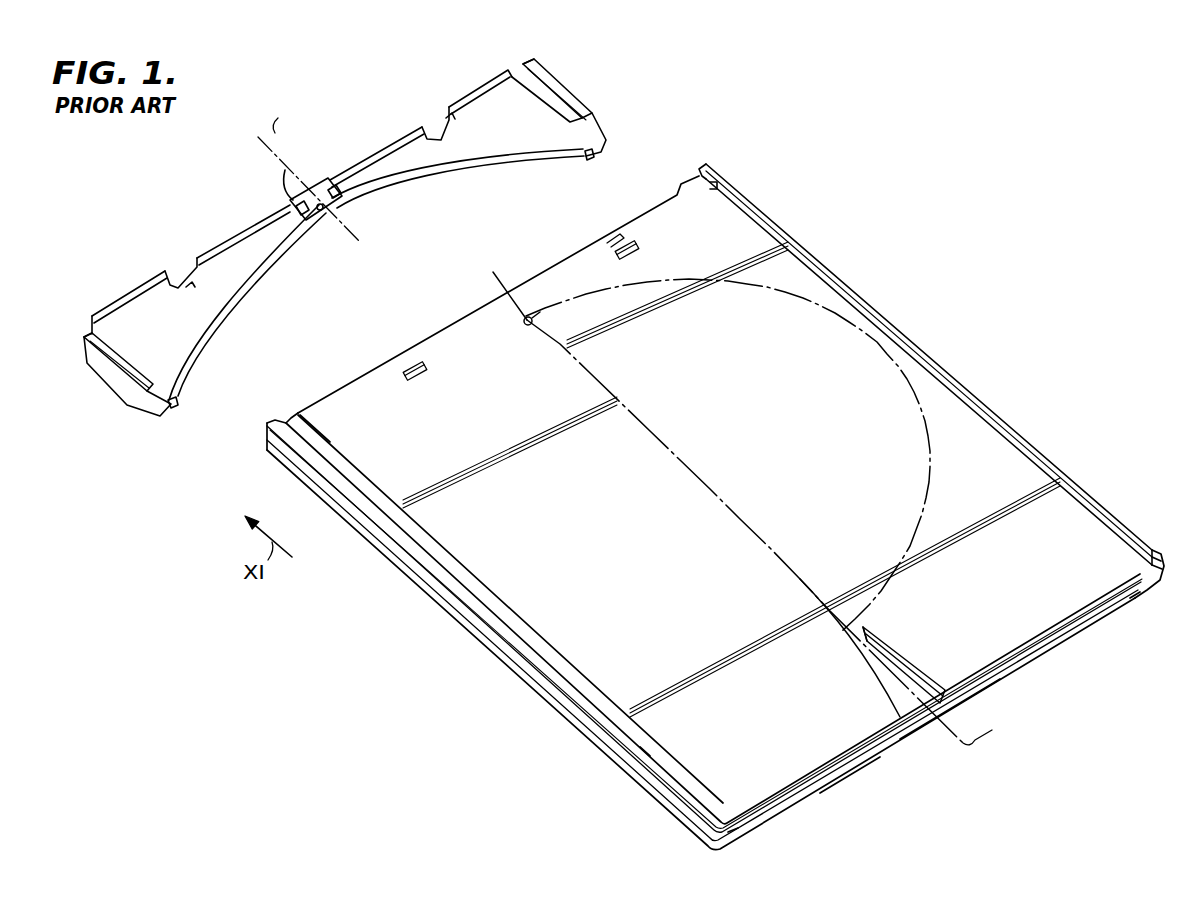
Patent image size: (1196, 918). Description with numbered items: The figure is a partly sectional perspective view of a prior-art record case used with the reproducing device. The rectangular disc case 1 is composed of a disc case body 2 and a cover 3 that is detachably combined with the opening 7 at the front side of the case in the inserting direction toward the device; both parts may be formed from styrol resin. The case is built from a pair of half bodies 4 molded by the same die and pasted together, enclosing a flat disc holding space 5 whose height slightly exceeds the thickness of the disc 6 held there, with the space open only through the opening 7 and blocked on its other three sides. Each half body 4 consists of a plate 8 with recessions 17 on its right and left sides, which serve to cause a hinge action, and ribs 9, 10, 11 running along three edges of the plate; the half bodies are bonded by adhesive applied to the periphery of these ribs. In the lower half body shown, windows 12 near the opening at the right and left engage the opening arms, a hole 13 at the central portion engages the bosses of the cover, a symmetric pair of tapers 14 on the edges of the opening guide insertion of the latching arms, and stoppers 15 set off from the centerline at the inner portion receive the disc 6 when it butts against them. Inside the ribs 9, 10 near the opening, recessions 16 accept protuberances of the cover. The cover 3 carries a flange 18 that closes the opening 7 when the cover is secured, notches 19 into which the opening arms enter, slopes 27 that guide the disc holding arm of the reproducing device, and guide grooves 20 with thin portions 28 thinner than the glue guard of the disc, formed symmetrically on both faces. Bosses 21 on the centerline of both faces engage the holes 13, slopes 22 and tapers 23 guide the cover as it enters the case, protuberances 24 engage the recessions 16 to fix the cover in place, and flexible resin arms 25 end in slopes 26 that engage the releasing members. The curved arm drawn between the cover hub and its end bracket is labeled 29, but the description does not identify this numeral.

The disc case 1 is at (726, 482).
The disc case body 2 is at (726, 636).
The cover 3 is at (345, 243).
The half body 4 is at (850, 759).
The disc holding space 5 is at (734, 453).
The disc 6 is at (935, 437).
The opening 7 is at (728, 489).
The plate 8 is at (1147, 568).
The rib 9 is at (935, 364).
The rib 10 is at (413, 585).
The rib 11 is at (1027, 655).
The window 12 is at (410, 362).
The hole 13 is at (537, 312).
The taper 14 is at (610, 240).
The stopper 15 is at (923, 637).
The recession 16 is at (732, 193).
The recession 17 is at (647, 748).
The flange 18 is at (388, 142).
The notch 19 is at (187, 274).
The guide groove 20 is at (287, 202).
The boss 21 is at (327, 220).
The slope 22 is at (606, 128).
The taper 23 is at (595, 154).
The protuberance 24 is at (548, 75).
The arm 25 is at (582, 102).
The slope 26 is at (537, 62).
The slope 27 is at (297, 171).
The thin portion 28 is at (340, 200).
The curved arm 29 is at (230, 300).